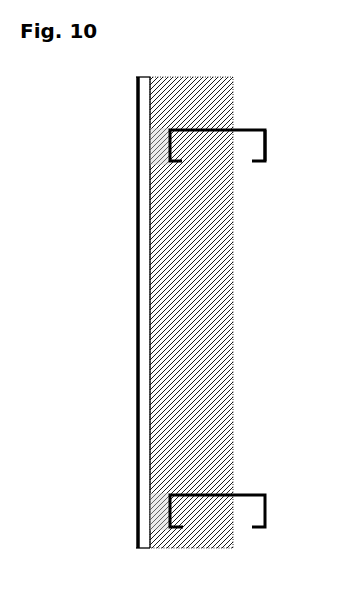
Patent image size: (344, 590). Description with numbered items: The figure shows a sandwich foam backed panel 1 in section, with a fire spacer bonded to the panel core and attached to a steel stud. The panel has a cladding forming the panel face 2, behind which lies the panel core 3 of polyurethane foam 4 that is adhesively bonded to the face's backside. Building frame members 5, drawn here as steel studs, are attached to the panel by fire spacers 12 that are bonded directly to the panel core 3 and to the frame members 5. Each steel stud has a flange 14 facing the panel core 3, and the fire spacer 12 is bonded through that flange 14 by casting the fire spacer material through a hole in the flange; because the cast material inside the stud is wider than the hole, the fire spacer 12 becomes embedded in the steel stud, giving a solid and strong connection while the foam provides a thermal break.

The foam backed panel 1 is at (128, 143).
The panel face 2 is at (136, 296).
The panel core 3 is at (148, 380).
The polyurethane foam 4 is at (201, 263).
The frame members 5 is at (265, 163).
The fire spacer 12 is at (160, 148).
The flange 14 is at (265, 148).